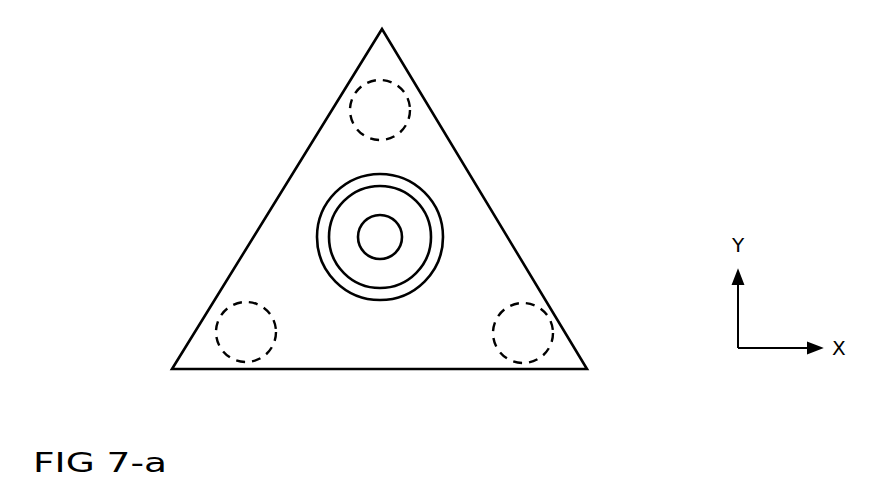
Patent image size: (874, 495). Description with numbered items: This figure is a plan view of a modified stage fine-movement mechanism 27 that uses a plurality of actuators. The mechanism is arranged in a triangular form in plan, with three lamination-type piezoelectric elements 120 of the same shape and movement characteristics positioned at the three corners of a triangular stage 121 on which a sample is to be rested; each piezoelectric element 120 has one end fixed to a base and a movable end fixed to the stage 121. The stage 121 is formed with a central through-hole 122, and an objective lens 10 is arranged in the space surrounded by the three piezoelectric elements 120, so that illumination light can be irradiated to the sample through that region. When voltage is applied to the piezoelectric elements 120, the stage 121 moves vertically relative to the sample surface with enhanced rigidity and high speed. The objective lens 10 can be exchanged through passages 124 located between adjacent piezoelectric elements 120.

The stage fine-movement mechanism 27 is at (495, 85).
The stage 121 is at (445, 160).
The lamination-type piezoelectric element 120 is at (390, 105).
The through-hole 122 is at (322, 220).
The objective lens 10 is at (412, 230).
The passage between adjacent piezoelectric elements 124 is at (482, 240).